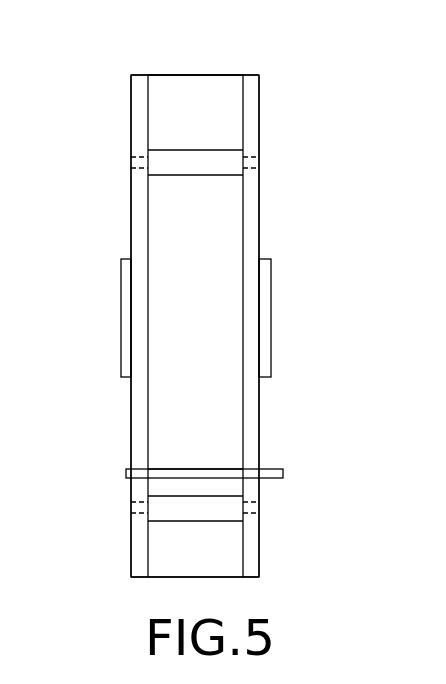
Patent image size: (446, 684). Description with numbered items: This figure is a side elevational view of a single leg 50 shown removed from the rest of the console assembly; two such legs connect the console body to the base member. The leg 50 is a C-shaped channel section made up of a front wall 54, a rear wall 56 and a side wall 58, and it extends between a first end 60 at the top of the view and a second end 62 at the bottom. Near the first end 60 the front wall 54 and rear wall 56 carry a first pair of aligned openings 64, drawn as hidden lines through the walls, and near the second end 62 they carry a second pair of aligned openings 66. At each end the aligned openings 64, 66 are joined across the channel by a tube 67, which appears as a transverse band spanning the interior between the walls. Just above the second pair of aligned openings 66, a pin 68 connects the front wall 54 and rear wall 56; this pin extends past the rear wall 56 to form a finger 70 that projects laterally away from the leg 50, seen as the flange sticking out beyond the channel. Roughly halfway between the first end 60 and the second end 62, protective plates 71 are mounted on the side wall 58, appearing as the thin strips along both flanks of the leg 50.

The leg 50 is at (370, 285).
The front wall 54 is at (131, 110).
The rear wall 56 is at (307, 122).
The side wall 58 is at (205, 88).
The first end 60 is at (343, 77).
The second end 62 is at (350, 562).
The first pair of aligned openings 64 is at (131, 168).
The second pair of aligned openings 66 is at (130, 505).
The tube 67 is at (280, 189).
The pin 68 is at (172, 470).
The finger 70 is at (318, 442).
The protective plate 71 is at (122, 322).